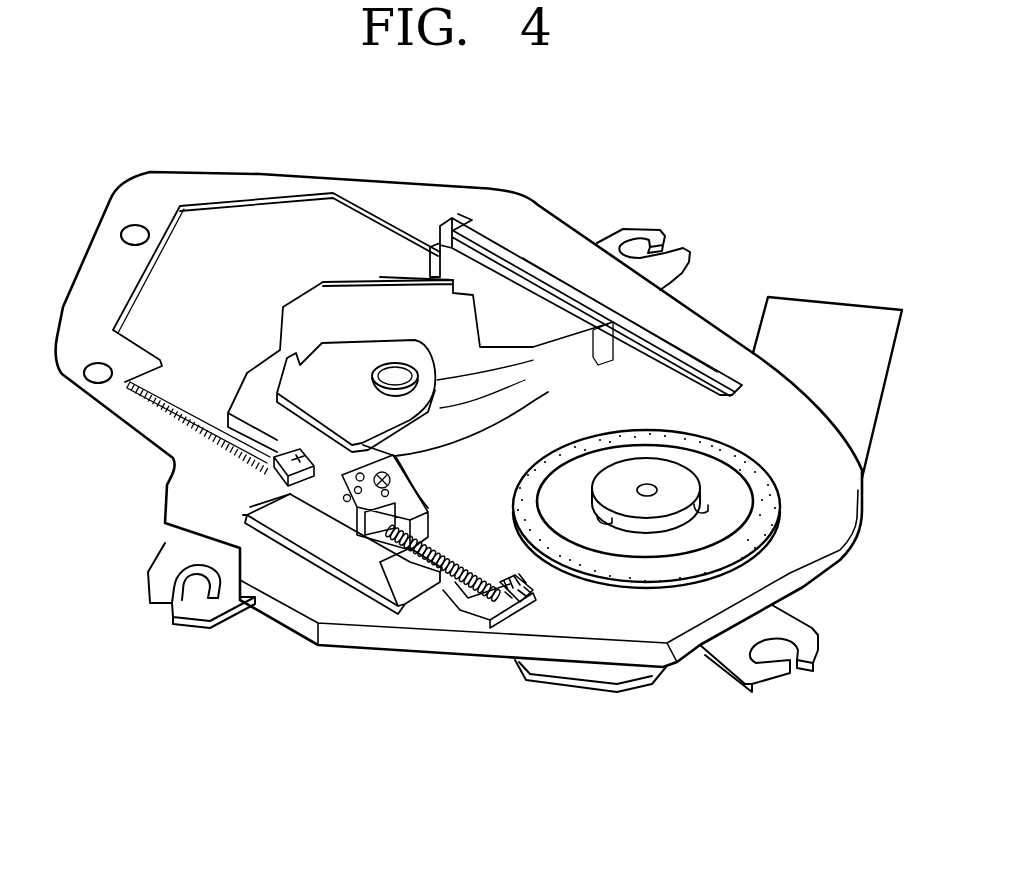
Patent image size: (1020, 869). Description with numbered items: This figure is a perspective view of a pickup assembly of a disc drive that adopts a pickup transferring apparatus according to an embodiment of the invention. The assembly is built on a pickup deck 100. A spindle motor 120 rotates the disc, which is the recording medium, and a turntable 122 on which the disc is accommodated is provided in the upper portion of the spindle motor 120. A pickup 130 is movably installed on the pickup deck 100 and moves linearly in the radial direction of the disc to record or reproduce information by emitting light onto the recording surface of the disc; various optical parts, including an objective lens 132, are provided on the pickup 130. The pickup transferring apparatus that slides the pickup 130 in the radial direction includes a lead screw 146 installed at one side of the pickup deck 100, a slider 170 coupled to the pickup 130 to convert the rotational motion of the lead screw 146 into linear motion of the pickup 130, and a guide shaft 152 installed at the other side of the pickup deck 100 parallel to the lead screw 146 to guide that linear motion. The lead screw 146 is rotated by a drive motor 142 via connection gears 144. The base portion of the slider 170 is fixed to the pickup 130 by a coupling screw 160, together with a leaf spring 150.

The pickup deck 100 is at (698, 328).
The spindle motor 120 is at (527, 555).
The turntable 122 is at (647, 578).
The pickup 130 is at (255, 320).
The objective lens 132 is at (388, 362).
The drive motor 142 is at (343, 555).
The connection gears 144 is at (481, 571).
The lead screw 146 is at (460, 563).
The leaf spring 150 is at (410, 506).
The guide shaft 152 is at (513, 280).
The coupling screw 160 is at (243, 515).
The slider 170 is at (282, 472).